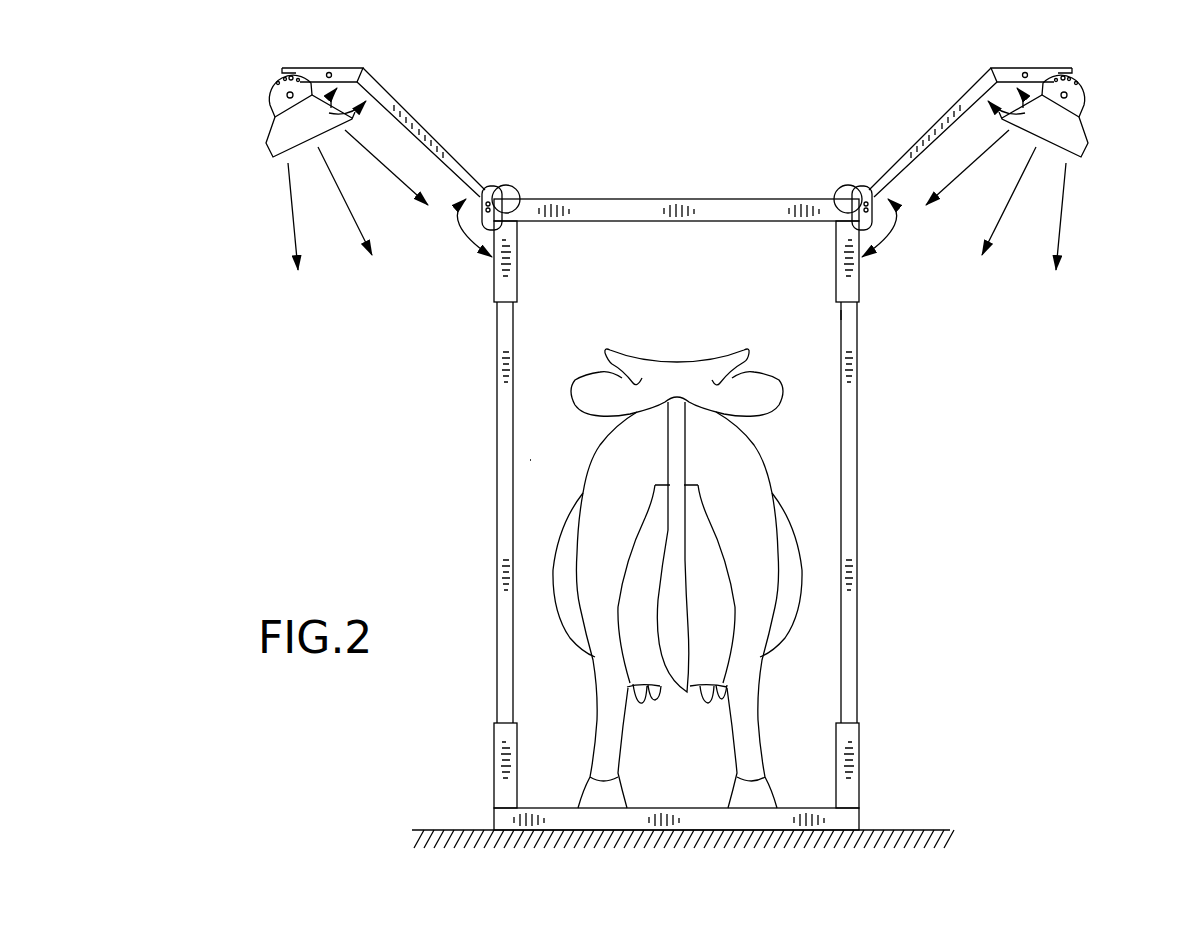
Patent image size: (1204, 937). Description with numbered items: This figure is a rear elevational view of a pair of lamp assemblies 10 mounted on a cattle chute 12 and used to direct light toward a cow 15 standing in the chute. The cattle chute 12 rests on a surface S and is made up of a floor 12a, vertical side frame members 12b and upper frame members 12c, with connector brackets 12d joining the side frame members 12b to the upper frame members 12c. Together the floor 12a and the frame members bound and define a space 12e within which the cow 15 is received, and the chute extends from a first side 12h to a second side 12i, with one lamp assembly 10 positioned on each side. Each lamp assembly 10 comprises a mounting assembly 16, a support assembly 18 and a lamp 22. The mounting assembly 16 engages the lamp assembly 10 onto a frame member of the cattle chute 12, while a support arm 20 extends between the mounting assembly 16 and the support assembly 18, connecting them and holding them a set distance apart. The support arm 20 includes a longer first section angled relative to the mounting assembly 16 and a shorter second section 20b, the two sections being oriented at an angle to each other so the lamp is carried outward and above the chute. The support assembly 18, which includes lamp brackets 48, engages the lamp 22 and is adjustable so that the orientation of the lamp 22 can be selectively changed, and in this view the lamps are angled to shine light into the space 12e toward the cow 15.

The lamp assembly 10 is at (432, 108).
The cattle chute 12 is at (643, 188).
The floor 12a is at (682, 808).
The side frame members 12b is at (500, 491).
The upper frame members 12c is at (677, 199).
The connector brackets 12d is at (517, 262).
The space 12e is at (553, 428).
The first side 12h is at (477, 393).
The second side 12i is at (878, 390).
The cow 15 is at (673, 347).
The mounting assembly 16 is at (511, 180).
The support assembly 18 is at (262, 78).
The support arm 20 is at (447, 134).
The second section 20b is at (343, 68).
The lamp 22 is at (268, 128).
The lamp brackets 48 is at (276, 94).
The surface S is at (445, 828).